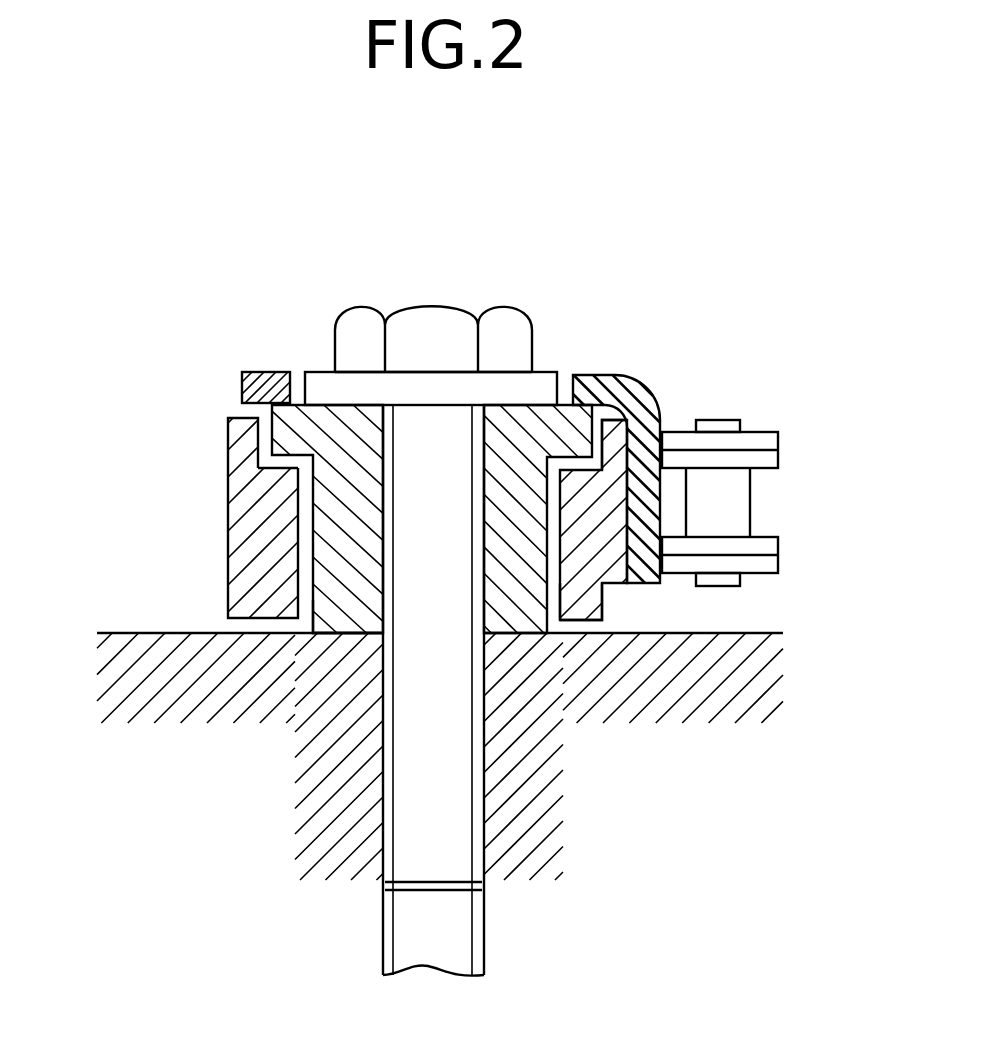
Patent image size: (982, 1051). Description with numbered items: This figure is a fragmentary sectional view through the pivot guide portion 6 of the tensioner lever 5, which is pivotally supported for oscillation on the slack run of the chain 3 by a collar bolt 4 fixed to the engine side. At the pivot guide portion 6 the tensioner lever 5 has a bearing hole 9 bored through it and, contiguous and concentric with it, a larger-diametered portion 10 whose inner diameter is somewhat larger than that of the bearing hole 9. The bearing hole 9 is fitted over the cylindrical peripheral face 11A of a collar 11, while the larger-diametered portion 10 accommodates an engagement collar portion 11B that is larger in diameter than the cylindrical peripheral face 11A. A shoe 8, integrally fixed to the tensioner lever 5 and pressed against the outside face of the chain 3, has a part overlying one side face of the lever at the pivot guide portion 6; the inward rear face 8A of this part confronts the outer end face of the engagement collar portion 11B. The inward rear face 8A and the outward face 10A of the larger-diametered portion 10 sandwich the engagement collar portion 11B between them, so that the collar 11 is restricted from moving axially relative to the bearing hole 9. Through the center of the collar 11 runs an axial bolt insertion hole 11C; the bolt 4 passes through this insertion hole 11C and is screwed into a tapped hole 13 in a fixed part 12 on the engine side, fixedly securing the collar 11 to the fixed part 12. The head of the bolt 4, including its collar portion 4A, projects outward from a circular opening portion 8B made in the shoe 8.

The chain 3 is at (737, 510).
The collar bolt 4 is at (492, 291).
The collar portion of the bolt 4A is at (543, 387).
The tensioner lever 5 is at (245, 512).
The pivot guide portion 6 is at (342, 571).
The shoe 8 is at (607, 377).
The inward rear face of the shoe 8A is at (250, 405).
The circular opening portion 8B is at (298, 370).
The bearing hole 9 is at (300, 555).
The larger-diametered portion 10 is at (228, 430).
The outward face of the larger-diametered portion 10A is at (258, 466).
The collar 11 is at (565, 582).
The cylindrical peripheral face 11A is at (550, 597).
The engagement collar portion 11B is at (577, 423).
The bolt insertion hole 11C is at (372, 612).
The fixed part 12 is at (563, 593).
The tapped hole 13 is at (480, 913).